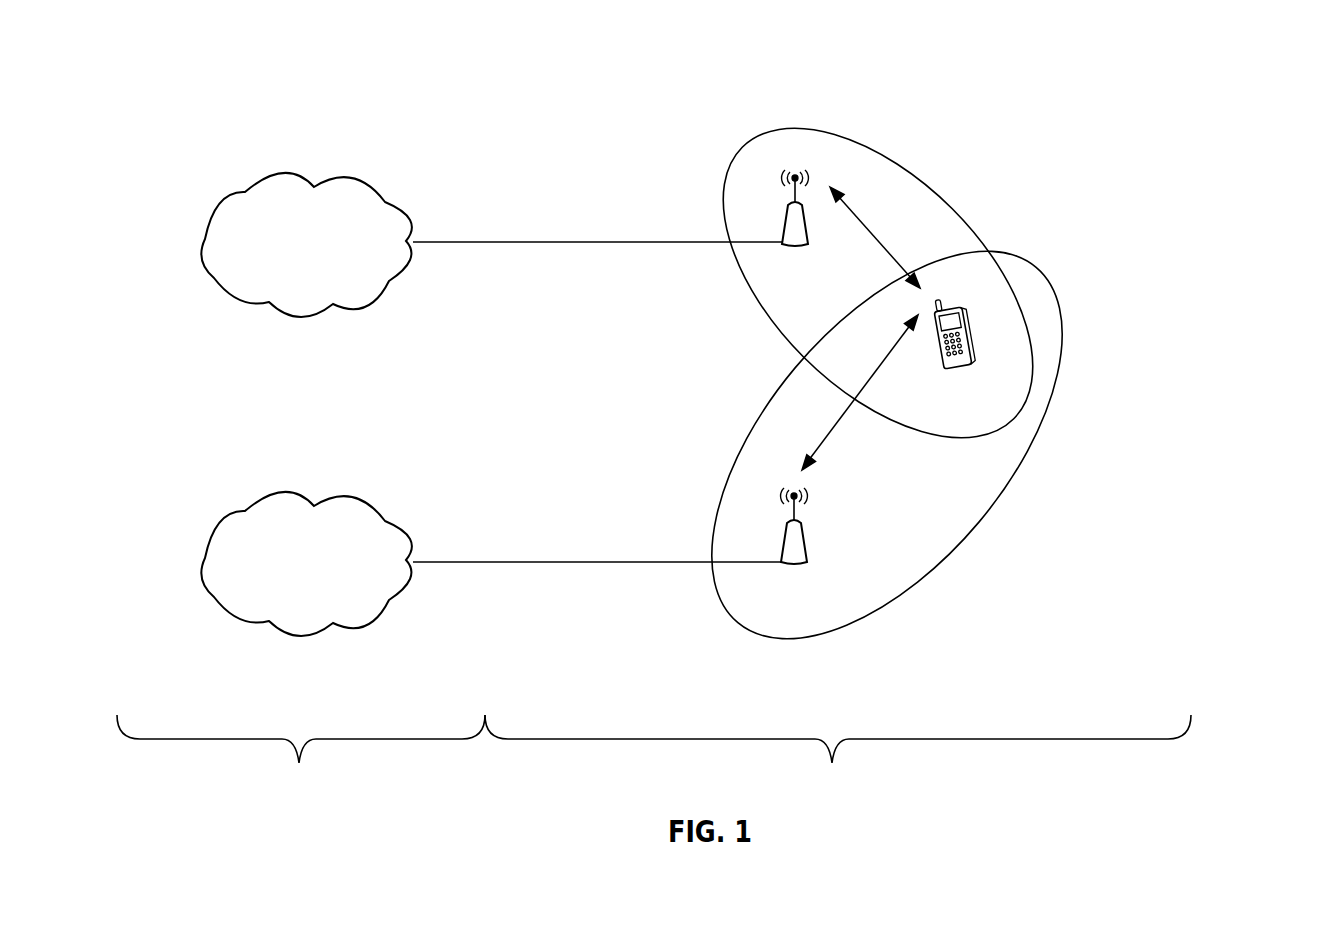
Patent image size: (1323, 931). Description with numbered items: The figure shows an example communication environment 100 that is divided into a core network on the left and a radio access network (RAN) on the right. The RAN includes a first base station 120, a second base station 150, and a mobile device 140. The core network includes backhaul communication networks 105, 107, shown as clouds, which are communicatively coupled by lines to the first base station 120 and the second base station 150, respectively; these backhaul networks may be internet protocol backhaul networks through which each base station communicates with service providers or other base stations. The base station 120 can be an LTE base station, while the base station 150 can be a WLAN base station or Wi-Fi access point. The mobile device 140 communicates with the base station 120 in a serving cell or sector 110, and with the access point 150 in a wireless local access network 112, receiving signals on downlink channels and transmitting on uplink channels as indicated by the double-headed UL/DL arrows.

The communication environment 100 is at (1253, 99).
The backhaul communication network 105 is at (306, 245).
The backhaul communication network 107 is at (306, 564).
The serving cell or sector 110 is at (875, 155).
The wireless local access network (WLAN) 112 is at (934, 567).
The first base station 120 is at (795, 224).
The mobile device 140 is at (953, 349).
The second base station 150 is at (793, 542).